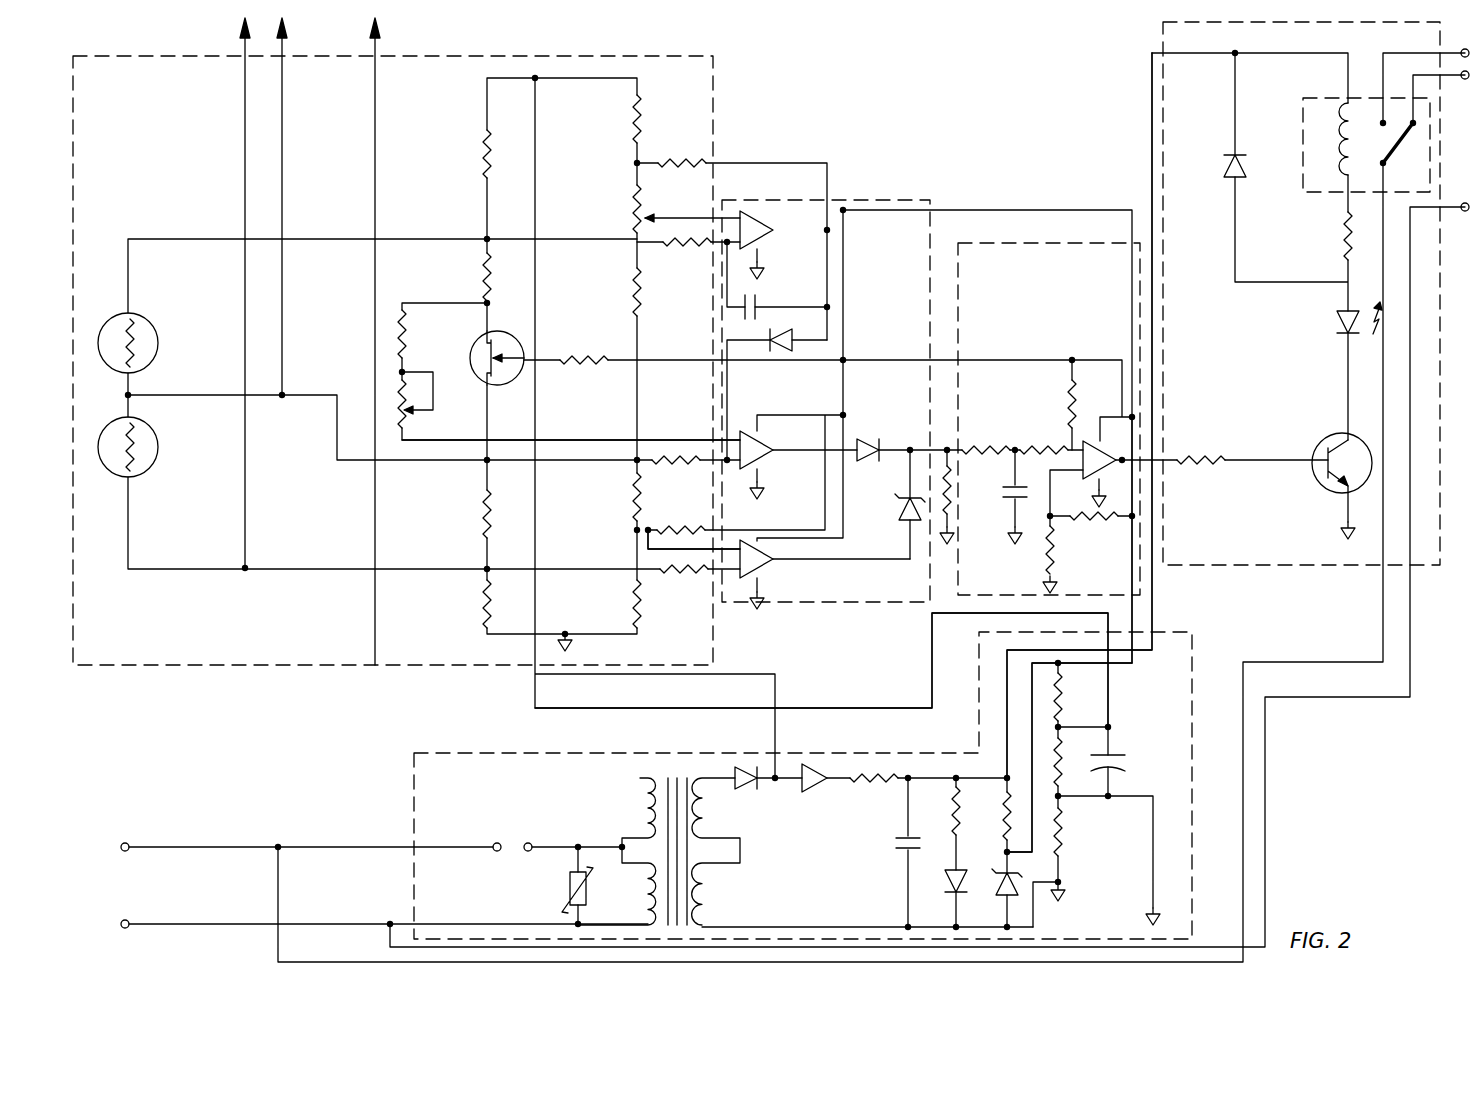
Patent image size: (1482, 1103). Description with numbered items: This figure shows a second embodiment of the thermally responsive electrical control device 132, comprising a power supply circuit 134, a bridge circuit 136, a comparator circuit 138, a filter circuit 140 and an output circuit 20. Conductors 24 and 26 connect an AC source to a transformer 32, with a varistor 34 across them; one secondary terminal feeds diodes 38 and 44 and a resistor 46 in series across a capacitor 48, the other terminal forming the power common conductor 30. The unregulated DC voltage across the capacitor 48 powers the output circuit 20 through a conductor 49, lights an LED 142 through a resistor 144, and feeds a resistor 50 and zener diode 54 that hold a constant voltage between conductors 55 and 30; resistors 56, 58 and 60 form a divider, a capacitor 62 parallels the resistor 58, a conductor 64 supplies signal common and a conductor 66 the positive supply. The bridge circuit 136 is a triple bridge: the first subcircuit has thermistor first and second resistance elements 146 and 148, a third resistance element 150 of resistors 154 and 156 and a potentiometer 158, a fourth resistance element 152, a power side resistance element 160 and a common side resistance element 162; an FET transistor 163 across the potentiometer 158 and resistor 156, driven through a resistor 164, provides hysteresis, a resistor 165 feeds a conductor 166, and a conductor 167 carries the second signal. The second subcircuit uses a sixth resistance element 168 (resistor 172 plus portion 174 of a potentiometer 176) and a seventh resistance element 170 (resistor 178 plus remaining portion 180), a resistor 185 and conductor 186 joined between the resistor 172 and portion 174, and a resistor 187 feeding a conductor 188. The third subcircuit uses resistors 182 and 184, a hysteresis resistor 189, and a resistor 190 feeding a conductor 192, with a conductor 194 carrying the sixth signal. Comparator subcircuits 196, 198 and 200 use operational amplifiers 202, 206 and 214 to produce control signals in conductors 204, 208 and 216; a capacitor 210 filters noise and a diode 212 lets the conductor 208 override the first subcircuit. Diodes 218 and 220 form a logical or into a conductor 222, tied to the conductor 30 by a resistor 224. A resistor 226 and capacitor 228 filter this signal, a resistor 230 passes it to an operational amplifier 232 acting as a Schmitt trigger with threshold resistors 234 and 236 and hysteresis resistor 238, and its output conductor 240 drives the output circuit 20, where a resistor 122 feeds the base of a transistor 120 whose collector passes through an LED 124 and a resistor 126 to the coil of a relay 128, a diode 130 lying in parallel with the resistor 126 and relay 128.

The output circuit 20 is at (1163, 104).
The conductor 24 is at (200, 924).
The conductor 26 is at (205, 847).
The power common conductor 30 is at (759, 264).
The transformer 32 is at (704, 890).
The varistor 34 is at (565, 887).
The diode 38 is at (745, 790).
The diode 44 is at (812, 772).
The resistor 46 is at (872, 775).
The capacitor 48 is at (890, 841).
The conductor 49 is at (1150, 600).
The resistor 50 is at (1000, 828).
The zener diode 54 is at (1002, 885).
The conductor 55 is at (1132, 628).
The resistor 56 is at (1048, 713).
The resistor 58 is at (1066, 756).
The resistor 60 is at (1065, 838).
The capacitor 62 is at (1126, 762).
The conductor 64 is at (572, 648).
The conductor 66 is at (556, 76).
The transistor 120 is at (1320, 480).
The resistor 122 is at (1224, 460).
The LED 124 is at (1335, 318).
The resistor 126 is at (1340, 235).
The relay 128 is at (1303, 140).
The diode 130 is at (1230, 175).
The thermally responsive electrical control device 132 is at (1297, 755).
The power supply circuit 134 is at (1195, 645).
The bridge circuit 136 is at (714, 96).
The comparator circuit 138 is at (888, 200).
The filter circuit 140 is at (1011, 244).
The LED 142 is at (942, 890).
The resistor 144 is at (950, 813).
The first resistance element 146 is at (155, 323).
The second resistance element 148 is at (158, 446).
The third resistance element 150 is at (470, 300).
The fourth resistance element 152 is at (482, 510).
The resistor 154 is at (485, 265).
The resistor 156 is at (408, 345).
The potentiometer 158 is at (410, 428).
The power side resistance element 160 is at (482, 150).
The common side resistance element 162 is at (482, 598).
The FET transistor 163 is at (506, 385).
The resistor 164 is at (582, 370).
The resistor 165 is at (680, 530).
The conductor 166 is at (698, 462).
The conductor 167 is at (673, 438).
The sixth resistance element 168 is at (650, 130).
The seventh resistance element 170 is at (652, 290).
The resistor 172 is at (633, 117).
The potentiometer portion 174 is at (630, 204).
The potentiometer 176 is at (633, 210).
The resistor 178 is at (630, 296).
The potentiometer portion 180 is at (639, 219).
The resistor 182 is at (628, 496).
The resistor 184 is at (630, 598).
The resistor 185 is at (680, 162).
The conductor 186 is at (682, 218).
The resistor 187 is at (675, 244).
The conductor 188 is at (712, 250).
The resistor 189 is at (710, 530).
The resistor 190 is at (682, 584).
The conductor 192 is at (707, 577).
The conductor 194 is at (643, 550).
The first comparator subcircuit 196 is at (752, 440).
The second comparator subcircuit 198 is at (750, 228).
The third comparator subcircuit 200 is at (790, 598).
The operational amplifier 202 is at (765, 461).
The conductor 204 is at (795, 452).
The operational amplifier 206 is at (768, 234).
The output conductor 208 is at (830, 230).
The capacitor 210 is at (760, 307).
The diode 212 is at (798, 345).
The operational amplifier 214 is at (760, 572).
The conductor 216 is at (828, 564).
The diode 218 is at (866, 444).
The diode 220 is at (905, 510).
The conductor 222 is at (910, 444).
The resistor 224 is at (954, 482).
The resistor 226 is at (964, 443).
The capacitor 228 is at (1015, 528).
The resistor 230 is at (1048, 447).
The operational amplifier 232 is at (1120, 450).
The resistor 234 is at (1092, 518).
The resistor 236 is at (1053, 556).
The resistor 238 is at (1067, 393).
The conductor 240 is at (1218, 462).